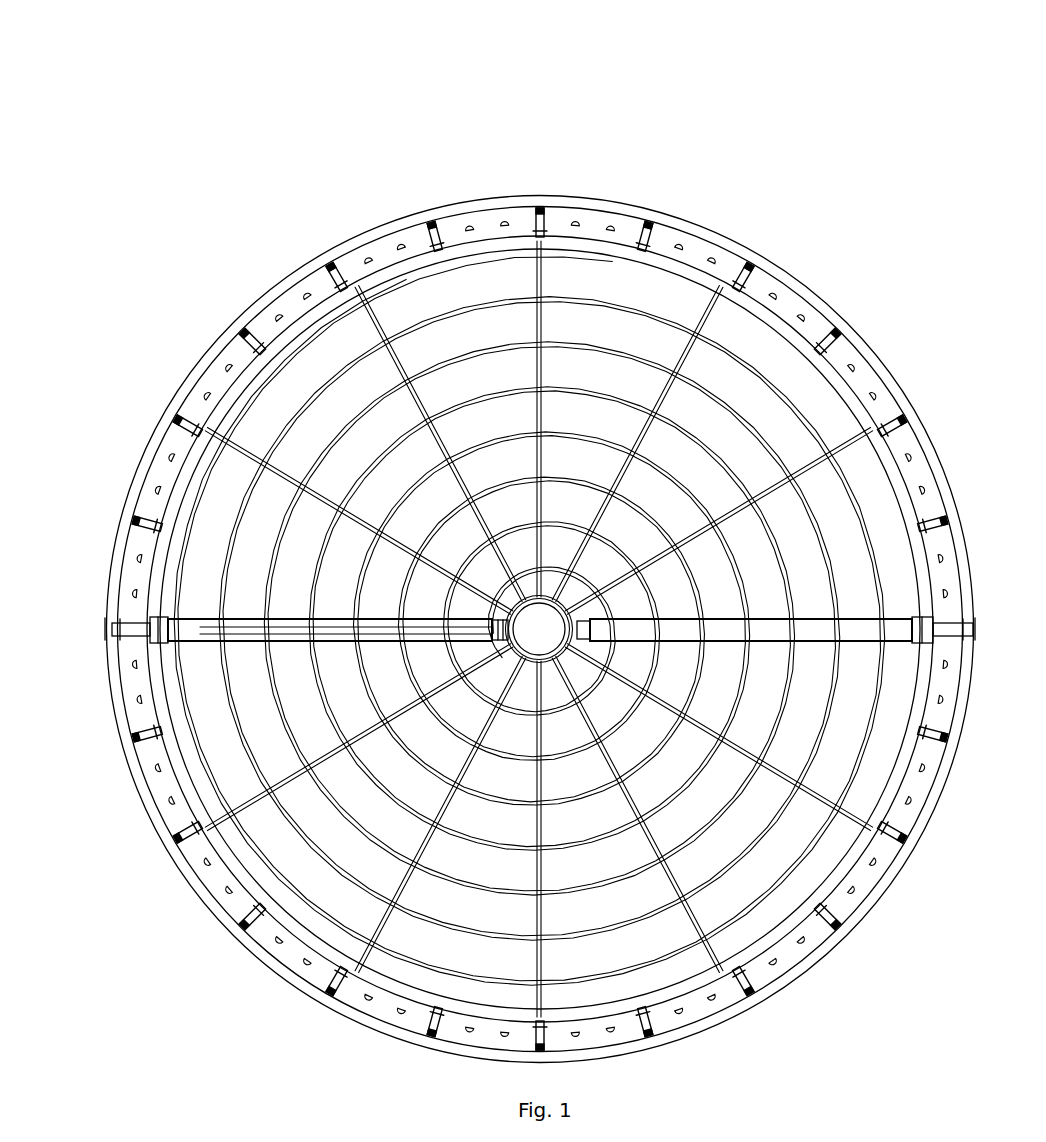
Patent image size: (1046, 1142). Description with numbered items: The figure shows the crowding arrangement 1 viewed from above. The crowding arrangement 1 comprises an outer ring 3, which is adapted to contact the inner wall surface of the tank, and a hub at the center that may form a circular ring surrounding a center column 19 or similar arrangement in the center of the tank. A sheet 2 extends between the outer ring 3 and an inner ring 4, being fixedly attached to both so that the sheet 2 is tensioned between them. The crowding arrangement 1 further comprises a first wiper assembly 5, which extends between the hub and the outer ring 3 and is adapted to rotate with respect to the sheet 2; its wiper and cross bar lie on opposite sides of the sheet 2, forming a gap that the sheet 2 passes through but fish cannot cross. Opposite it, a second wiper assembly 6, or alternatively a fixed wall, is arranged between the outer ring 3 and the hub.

The crowding arrangement 1 is at (272, 186).
The sheet 2 is at (677, 320).
The outer ring 3 is at (229, 345).
The inner ring 4 is at (512, 518).
The first wiper assembly 5 is at (242, 627).
The second wiper assembly 6 is at (835, 627).
The center column 19 is at (538, 626).